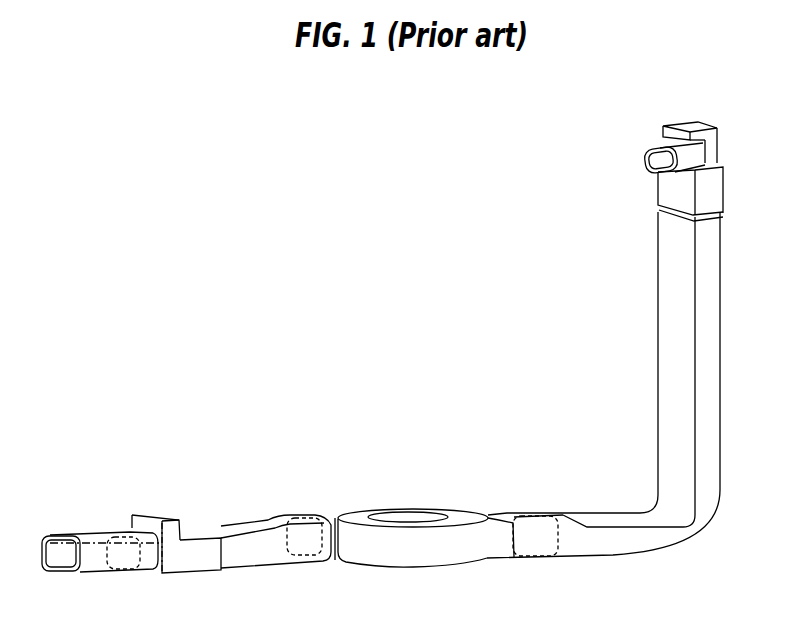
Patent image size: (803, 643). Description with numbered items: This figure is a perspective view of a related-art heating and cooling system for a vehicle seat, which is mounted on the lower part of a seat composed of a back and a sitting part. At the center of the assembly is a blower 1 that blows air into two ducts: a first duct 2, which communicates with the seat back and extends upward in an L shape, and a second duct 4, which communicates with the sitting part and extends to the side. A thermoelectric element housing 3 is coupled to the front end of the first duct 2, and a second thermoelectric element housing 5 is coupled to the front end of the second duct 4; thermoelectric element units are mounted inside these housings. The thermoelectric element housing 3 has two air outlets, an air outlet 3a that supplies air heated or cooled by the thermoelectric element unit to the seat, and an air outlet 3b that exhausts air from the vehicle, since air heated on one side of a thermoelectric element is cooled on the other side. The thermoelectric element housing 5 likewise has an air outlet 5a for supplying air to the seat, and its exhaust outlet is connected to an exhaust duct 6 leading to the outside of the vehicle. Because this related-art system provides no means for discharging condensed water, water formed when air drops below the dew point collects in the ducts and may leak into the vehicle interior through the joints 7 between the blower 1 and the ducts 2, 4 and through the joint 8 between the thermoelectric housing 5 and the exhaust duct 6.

The blower 1 is at (400, 517).
The first duct 2 is at (700, 527).
The thermoelectric element housing 3 is at (729, 160).
The air outlet 3a is at (655, 163).
The air outlet 3b is at (690, 122).
The second duct 4 is at (267, 547).
The thermoelectric element housing 5 is at (200, 510).
The air outlet 5a is at (157, 512).
The exhaust duct 6 is at (93, 532).
The joints 7 is at (513, 543).
The joint 8 is at (163, 557).